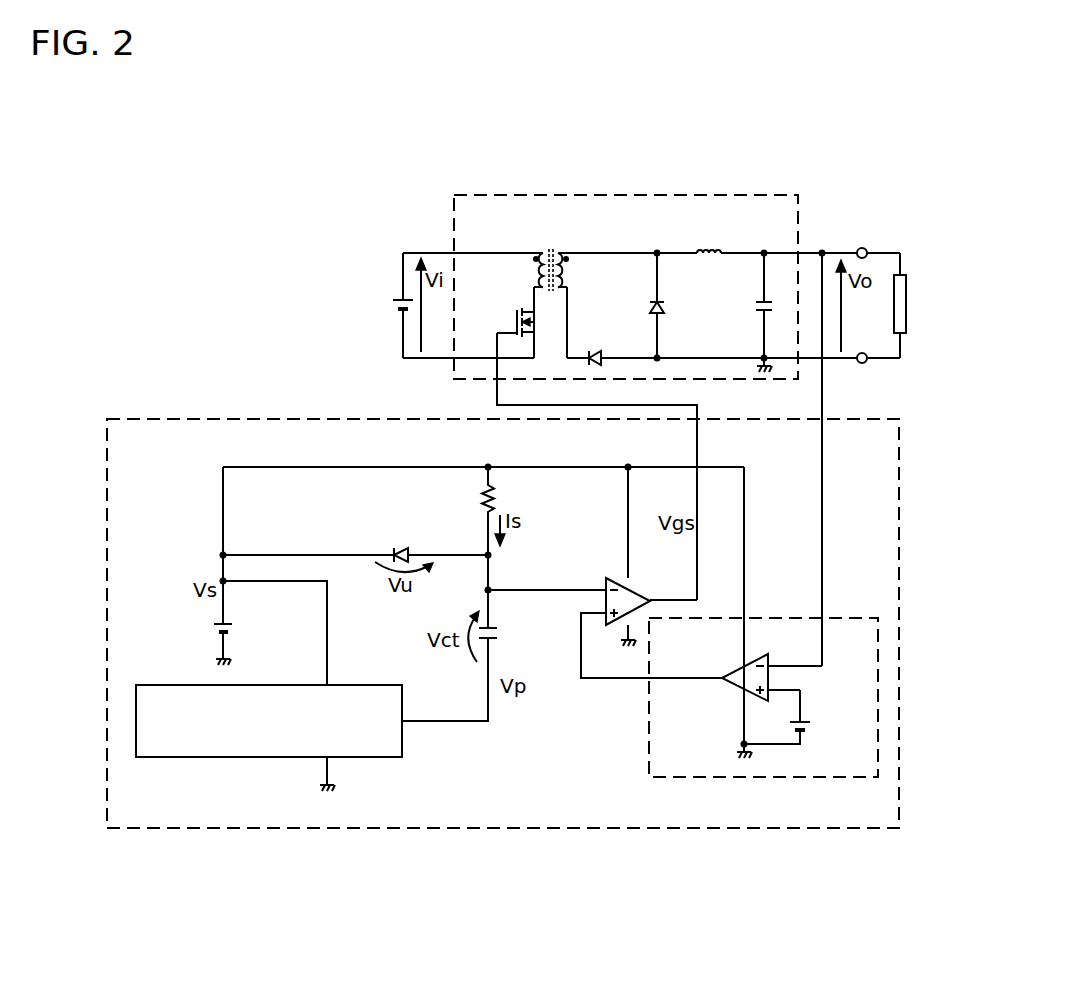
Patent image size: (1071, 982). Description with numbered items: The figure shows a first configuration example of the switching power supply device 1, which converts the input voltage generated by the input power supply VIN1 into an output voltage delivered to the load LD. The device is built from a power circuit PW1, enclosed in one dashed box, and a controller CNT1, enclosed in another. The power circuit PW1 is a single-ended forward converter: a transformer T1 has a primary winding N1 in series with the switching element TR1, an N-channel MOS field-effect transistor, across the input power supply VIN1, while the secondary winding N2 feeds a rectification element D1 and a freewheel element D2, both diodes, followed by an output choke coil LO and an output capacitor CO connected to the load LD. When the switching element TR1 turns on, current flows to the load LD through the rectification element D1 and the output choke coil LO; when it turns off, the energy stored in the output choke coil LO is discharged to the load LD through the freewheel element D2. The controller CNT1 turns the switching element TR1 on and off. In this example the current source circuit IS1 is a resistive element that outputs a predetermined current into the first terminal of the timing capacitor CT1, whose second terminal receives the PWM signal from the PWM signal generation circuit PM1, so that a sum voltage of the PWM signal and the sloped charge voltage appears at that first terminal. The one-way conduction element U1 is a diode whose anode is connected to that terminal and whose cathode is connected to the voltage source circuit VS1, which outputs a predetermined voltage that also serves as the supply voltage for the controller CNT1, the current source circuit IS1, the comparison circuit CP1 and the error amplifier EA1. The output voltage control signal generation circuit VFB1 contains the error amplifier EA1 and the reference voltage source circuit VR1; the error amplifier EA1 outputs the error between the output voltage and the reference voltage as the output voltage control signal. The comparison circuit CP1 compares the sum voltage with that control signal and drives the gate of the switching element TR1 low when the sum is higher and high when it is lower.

The switching power supply device 1 is at (826, 122).
The power circuit PW1 is at (627, 194).
The transformer T1 is at (554, 251).
The primary winding N1 is at (536, 282).
The secondary winding N2 is at (566, 282).
The switching element TR1 is at (512, 317).
The input power supply VIN1 is at (390, 303).
The rectification element D1 is at (594, 348).
The freewheel element D2 is at (648, 303).
The output choke coil LO is at (706, 244).
The output capacitor CO is at (754, 303).
The load LD is at (907, 302).
The controller CNT1 is at (522, 830).
The current source circuit IS1 is at (499, 498).
The one-way conduction element U1 is at (399, 545).
The voltage source circuit VS1 is at (209, 628).
The timing capacitor CT1 is at (501, 634).
The PWM signal generation circuit PM1 is at (403, 699).
The comparison circuit CP1 is at (639, 593).
The output voltage control signal generation circuit VFB1 is at (769, 779).
The error amplifier EA1 is at (739, 692).
The reference voltage source circuit VR1 is at (812, 728).